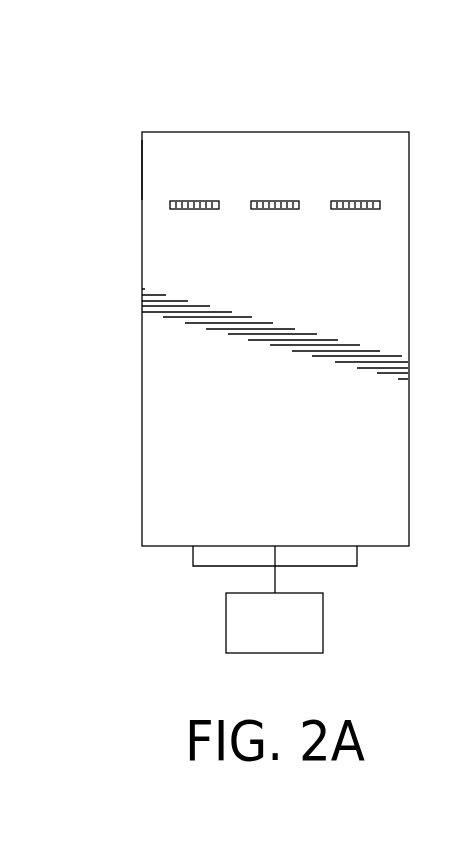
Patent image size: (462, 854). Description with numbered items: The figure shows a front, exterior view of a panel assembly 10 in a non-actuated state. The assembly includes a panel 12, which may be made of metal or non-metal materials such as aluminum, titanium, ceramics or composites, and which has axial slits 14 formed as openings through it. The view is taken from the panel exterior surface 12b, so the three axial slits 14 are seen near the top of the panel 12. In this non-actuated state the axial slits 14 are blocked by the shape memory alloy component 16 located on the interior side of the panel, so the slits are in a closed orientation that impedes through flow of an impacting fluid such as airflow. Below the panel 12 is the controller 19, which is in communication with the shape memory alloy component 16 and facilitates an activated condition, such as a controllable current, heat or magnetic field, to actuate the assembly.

The panel assembly 10 is at (225, 343).
The panel 12 is at (366, 132).
The panel exterior surface 12b is at (155, 159).
The axial slits 14 is at (210, 199).
The shape memory alloy component 16 is at (278, 199).
The controller 19 is at (257, 636).